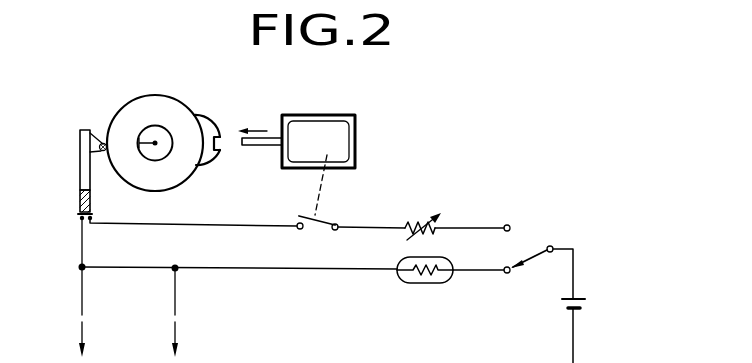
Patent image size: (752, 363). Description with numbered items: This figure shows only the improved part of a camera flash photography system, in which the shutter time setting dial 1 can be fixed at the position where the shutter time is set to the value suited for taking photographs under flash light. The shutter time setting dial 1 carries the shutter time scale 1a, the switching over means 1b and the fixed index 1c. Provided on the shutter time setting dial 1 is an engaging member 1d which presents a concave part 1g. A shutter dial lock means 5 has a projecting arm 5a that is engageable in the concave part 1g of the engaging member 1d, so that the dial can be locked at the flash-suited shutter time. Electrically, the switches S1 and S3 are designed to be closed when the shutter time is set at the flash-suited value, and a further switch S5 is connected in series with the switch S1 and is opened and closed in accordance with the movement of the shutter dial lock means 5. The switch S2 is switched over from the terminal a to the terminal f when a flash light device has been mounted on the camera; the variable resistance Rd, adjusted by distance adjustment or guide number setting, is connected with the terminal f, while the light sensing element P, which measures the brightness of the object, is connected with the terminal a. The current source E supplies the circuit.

The shutter time setting dial 1 is at (180, 124).
The shutter time scale 1a is at (130, 107).
The switching over means 1b is at (101, 143).
The fixed index 1c is at (155, 141).
The engaging member 1d is at (208, 121).
The concave part 1g is at (220, 148).
The shutter dial lock means 5 is at (332, 115).
The projecting arm 5a is at (268, 146).
The switch S1 is at (66, 175).
The switch S3 is at (66, 196).
The switch S5 is at (317, 234).
The switch S2 is at (532, 266).
The variable resistance Rd is at (423, 221).
The light sensing element P is at (402, 262).
The terminal f is at (503, 216).
The terminal a is at (504, 282).
The current source E is at (569, 306).